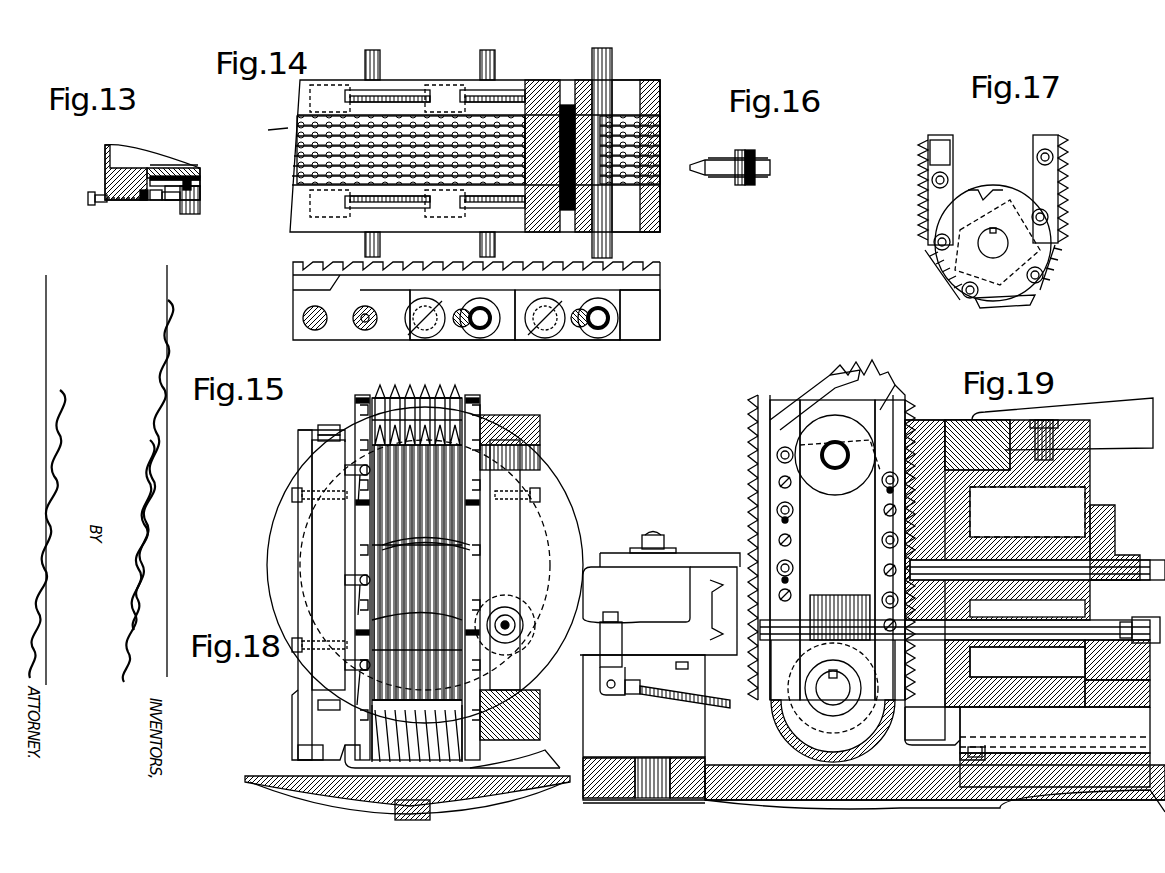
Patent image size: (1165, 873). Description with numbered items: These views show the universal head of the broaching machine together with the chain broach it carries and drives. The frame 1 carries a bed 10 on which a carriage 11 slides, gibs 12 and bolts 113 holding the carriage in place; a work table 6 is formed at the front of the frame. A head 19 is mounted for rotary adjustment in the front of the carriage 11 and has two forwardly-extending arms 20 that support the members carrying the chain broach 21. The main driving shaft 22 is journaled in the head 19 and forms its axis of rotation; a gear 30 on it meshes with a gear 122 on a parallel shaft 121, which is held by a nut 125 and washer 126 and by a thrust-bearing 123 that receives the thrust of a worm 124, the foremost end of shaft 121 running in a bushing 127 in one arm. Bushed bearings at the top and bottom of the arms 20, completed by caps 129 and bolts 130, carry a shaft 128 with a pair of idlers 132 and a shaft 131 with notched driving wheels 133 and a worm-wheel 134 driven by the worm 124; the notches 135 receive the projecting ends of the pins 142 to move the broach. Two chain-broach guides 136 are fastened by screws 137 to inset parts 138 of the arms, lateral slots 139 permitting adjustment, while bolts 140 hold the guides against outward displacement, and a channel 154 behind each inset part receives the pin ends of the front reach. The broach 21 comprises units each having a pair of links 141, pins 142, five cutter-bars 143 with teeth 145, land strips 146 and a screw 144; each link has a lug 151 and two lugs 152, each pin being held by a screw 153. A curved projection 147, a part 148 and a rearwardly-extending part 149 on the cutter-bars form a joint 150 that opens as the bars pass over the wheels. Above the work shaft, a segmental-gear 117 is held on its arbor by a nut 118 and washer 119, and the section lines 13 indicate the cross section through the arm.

In FIG. 18, the frame 1 is at (305, 792).
In FIG. 19, the frame 1 is at (874, 795).
In FIG. 19, the work table 6 is at (585, 656).
In FIG. 19, the bed 10 is at (1055, 747).
In FIG. 19, the carriage 11 is at (1062, 725).
In FIG. 19, the gibs 12 is at (958, 750).
In FIG. 15, the section lines 13— 13 is at (320, 558).
In FIG. 15, the head 19 is at (290, 537).
In FIG. 19, the head 19 is at (1082, 480).
In FIG. 13, the arms 20 is at (118, 202).
In FIG. 15, the arms 20 is at (416, 565).
In FIG. 19, the arms 20 is at (836, 550).
In FIG. 14, the chain broach 21 is at (485, 156).
In FIG. 17, the chain broach 21 is at (1059, 293).
In FIG. 15, the chain broach 21 is at (417, 404).
In FIG. 19, the chain broach 21 is at (804, 531).
In FIG. 19, the main or driving shaft 22 is at (1110, 560).
In FIG. 19, the gear 30 is at (1105, 507).
In FIG. 19, the bolts 113 is at (968, 757).
In FIG. 19, the segmental-gear 117 is at (618, 560).
In FIG. 19, the nut 118 is at (650, 535).
In FIG. 19, the washer 119 is at (670, 548).
In FIG. 15, the shaft 121 is at (512, 612).
In FIG. 19, the shaft 121 is at (1145, 642).
In FIG. 19, the gear 122 is at (1140, 618).
In FIG. 19, the thrust-bearing 123 is at (931, 726).
In FIG. 15, the worm 124 is at (519, 616).
In FIG. 19, the worm 124 is at (883, 598).
In FIG. 19, the nut 125 is at (1027, 691).
In FIG. 19, the washer 126 is at (1075, 700).
In FIG. 19, the bushing 127 is at (955, 611).
In FIG. 15, the shaft 128 is at (525, 440).
In FIG. 19, the shaft 128 is at (830, 470).
In FIG. 15, the caps 129 is at (312, 430).
In FIG. 18, the caps 129 is at (310, 715).
In FIG. 15, the bolts 130 is at (318, 430).
In FIG. 18, the bolts 130 is at (318, 705).
In FIG. 17, the shaft 131 is at (995, 240).
In FIG. 19, the shaft 131 is at (590, 615).
In FIG. 15, the idlers 132 is at (465, 415).
In FIG. 19, the idlers 132 is at (838, 464).
In FIG. 17, the notched driving wheels 133 is at (992, 195).
In FIG. 18, the notched driving wheels 133 is at (445, 762).
In FIG. 18, the worm-wheel 134 is at (500, 750).
In FIG. 19, the worm-wheel 134 is at (833, 701).
In FIG. 17, the notches 135 is at (975, 192).
In FIG. 13, the chain-broach guides 136 is at (172, 202).
In FIG. 15, the chain-broach guides 136 is at (397, 625).
In FIG. 18, the chain-broach guides 136 is at (360, 635).
In FIG. 13, the screws 137 is at (154, 201).
In FIG. 15, the screws 137 is at (367, 551).
In FIG. 18, the screws 137 is at (360, 701).
In FIG. 13, the inset part 138 is at (150, 168).
In FIG. 15, the inset part 138 is at (470, 562).
In FIG. 13, the lateral slots 139 is at (142, 202).
In FIG. 15, the lateral slots 139 is at (345, 470).
In FIG. 18, the lateral slots 139 is at (345, 666).
In FIG. 13, the bolts 140 is at (92, 204).
In FIG. 15, the bolts 140 is at (292, 497).
In FIG. 18, the bolts 140 is at (292, 648).
In FIG. 14, the links 141 is at (450, 100).
In FIG. 17, the links 141 is at (1050, 192).
In FIG. 15, the links 141 is at (370, 400).
In FIG. 19, the links 141 is at (805, 527).
In FIG. 13, the pin 142 is at (192, 185).
In FIG. 14, the pin 142 is at (605, 70).
In FIG. 16, the pin 142 is at (745, 152).
In FIG. 17, the pin 142 is at (1055, 157).
In FIG. 15, the pin 142 is at (356, 400).
In FIG. 19, the pin 142 is at (882, 544).
In FIG. 13, the cutter-bars 143 is at (200, 192).
In FIG. 14, the cutter-bars 143 is at (665, 170).
In FIG. 16, the cutter-bars 143 is at (760, 168).
In FIG. 14, the screw 144 is at (545, 210).
In FIG. 19, the screw 144 is at (790, 574).
In FIG. 13, the teeth 145 is at (195, 196).
In FIG. 14, the teeth 145 is at (302, 142).
In FIG. 16, the teeth 145 is at (690, 170).
In FIG. 17, the teeth 145 is at (922, 205).
In FIG. 19, the teeth 145 is at (875, 385).
In FIG. 14, the strips 146 is at (335, 150).
In FIG. 16, the strips 146 is at (760, 160).
In FIG. 14, the curved projection 147 is at (360, 336).
In FIG. 14, the part 148 is at (360, 325).
In FIG. 14, the part 149 is at (335, 280).
In FIG. 14, the joint 150 is at (500, 110).
In FIG. 15, the joint 150 is at (480, 560).
In FIG. 13, the lug 151 is at (200, 183).
In FIG. 14, the lug 151 is at (360, 92).
In FIG. 13, the lugs 152 is at (175, 177).
In FIG. 14, the lugs 152 is at (380, 95).
In FIG. 14, the screw 153 is at (560, 225).
In FIG. 19, the screw 153 is at (780, 520).
In FIG. 13, the channel 154 is at (160, 167).